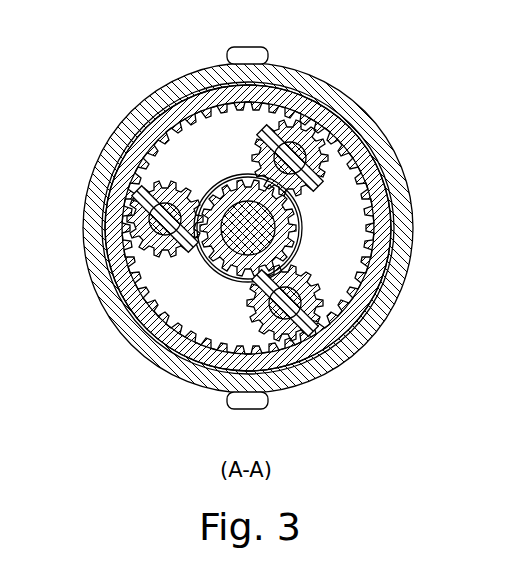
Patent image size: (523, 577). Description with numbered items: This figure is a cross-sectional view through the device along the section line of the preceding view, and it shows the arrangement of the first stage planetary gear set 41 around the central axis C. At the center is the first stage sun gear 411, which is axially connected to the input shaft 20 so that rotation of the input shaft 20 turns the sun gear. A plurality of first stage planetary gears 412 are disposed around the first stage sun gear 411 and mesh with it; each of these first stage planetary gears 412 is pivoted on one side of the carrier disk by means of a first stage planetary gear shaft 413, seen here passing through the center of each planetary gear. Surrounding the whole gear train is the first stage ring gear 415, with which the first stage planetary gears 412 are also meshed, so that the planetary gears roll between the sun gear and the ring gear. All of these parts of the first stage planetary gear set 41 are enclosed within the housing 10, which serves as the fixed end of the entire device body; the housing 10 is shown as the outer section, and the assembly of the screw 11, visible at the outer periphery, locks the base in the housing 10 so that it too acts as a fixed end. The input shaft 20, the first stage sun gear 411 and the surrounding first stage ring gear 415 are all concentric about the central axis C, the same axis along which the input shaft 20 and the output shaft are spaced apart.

The housing 10 is at (150, 354).
The screw 11 is at (248, 47).
The input shaft 20 is at (218, 186).
The first stage planetary gear set 41 is at (392, 306).
The first stage sun gear 411 is at (300, 221).
The first stage planetary gears 412 is at (110, 309).
The first stage planetary gear shaft 413 is at (112, 230).
The first stage ring gear 415 is at (140, 113).
The central axis C is at (300, 255).